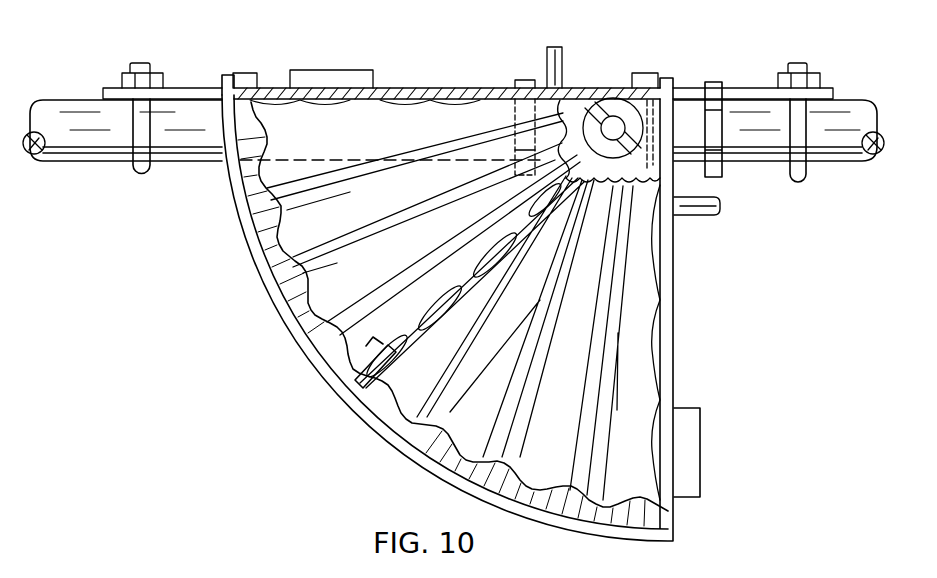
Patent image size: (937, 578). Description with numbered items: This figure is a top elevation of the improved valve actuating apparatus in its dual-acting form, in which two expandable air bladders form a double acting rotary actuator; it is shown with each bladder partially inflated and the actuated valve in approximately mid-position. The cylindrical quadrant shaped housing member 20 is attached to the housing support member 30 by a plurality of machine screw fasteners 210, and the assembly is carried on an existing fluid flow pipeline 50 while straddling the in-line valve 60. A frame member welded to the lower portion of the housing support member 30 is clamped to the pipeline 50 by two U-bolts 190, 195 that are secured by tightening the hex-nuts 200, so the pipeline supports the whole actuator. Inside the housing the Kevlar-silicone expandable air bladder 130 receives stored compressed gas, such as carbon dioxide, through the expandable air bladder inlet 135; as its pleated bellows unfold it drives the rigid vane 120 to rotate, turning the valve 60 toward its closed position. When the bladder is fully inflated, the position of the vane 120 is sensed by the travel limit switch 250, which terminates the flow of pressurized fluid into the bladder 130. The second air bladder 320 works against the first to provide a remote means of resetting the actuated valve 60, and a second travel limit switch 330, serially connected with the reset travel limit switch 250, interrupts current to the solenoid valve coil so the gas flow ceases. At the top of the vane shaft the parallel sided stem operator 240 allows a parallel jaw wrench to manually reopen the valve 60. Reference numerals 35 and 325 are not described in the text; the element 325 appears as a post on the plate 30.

The cylindrical quadrant shaped housing member 20 is at (365, 420).
The housing support member 30 is at (430, 88).
The top plate portion 35 is at (444, 93).
The fluid flow pipeline 50 is at (68, 130).
The in-line valve 60 is at (688, 117).
The rigid vane 120 is at (372, 338).
The expandable air bladder 130 is at (577, 356).
The expandable air bladder inlet 135 is at (703, 218).
The U-bolt 190 is at (798, 186).
The U-bolt 195 is at (147, 178).
The hex-nuts 200 is at (126, 72).
The machine screw fasteners 210 is at (244, 72).
The parallel sided stem operator 240 is at (593, 105).
The travel limit switch 250 is at (333, 70).
The air bladder 320 is at (345, 278).
The post 325 is at (545, 62).
The second travel limit switch 330 is at (700, 452).